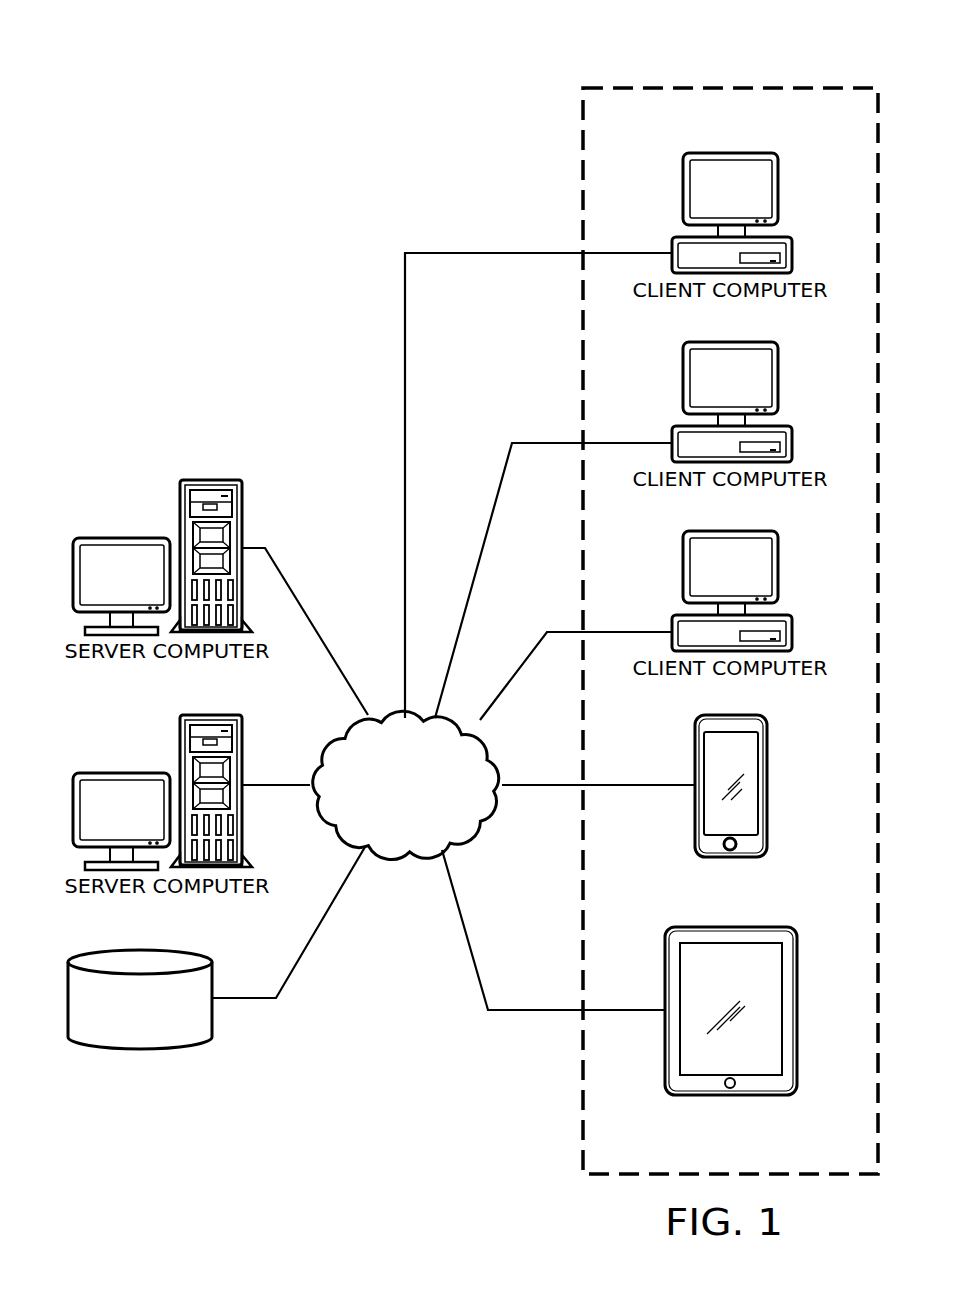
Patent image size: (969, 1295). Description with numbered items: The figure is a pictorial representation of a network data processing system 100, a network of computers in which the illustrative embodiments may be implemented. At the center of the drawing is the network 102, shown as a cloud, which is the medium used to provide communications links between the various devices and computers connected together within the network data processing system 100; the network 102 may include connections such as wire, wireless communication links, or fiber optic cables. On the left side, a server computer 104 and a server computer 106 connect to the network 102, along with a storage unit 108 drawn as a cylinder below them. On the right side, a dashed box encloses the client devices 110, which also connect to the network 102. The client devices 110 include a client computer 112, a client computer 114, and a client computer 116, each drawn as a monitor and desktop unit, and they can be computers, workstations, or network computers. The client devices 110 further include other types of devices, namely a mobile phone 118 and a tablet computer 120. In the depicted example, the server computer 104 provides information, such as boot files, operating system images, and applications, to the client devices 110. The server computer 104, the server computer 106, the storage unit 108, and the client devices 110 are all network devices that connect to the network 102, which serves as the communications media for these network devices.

The network data processing system 100 is at (262, 346).
The network 102 is at (428, 818).
The server computer 104 is at (122, 537).
The server computer 106 is at (122, 773).
The storage unit 108 is at (138, 1048).
The client devices 110 is at (786, 80).
The client computer 112 is at (779, 190).
The client computer 114 is at (779, 379).
The client computer 116 is at (779, 568).
The mobile phone 118 is at (768, 803).
The tablet computer 120 is at (798, 1021).